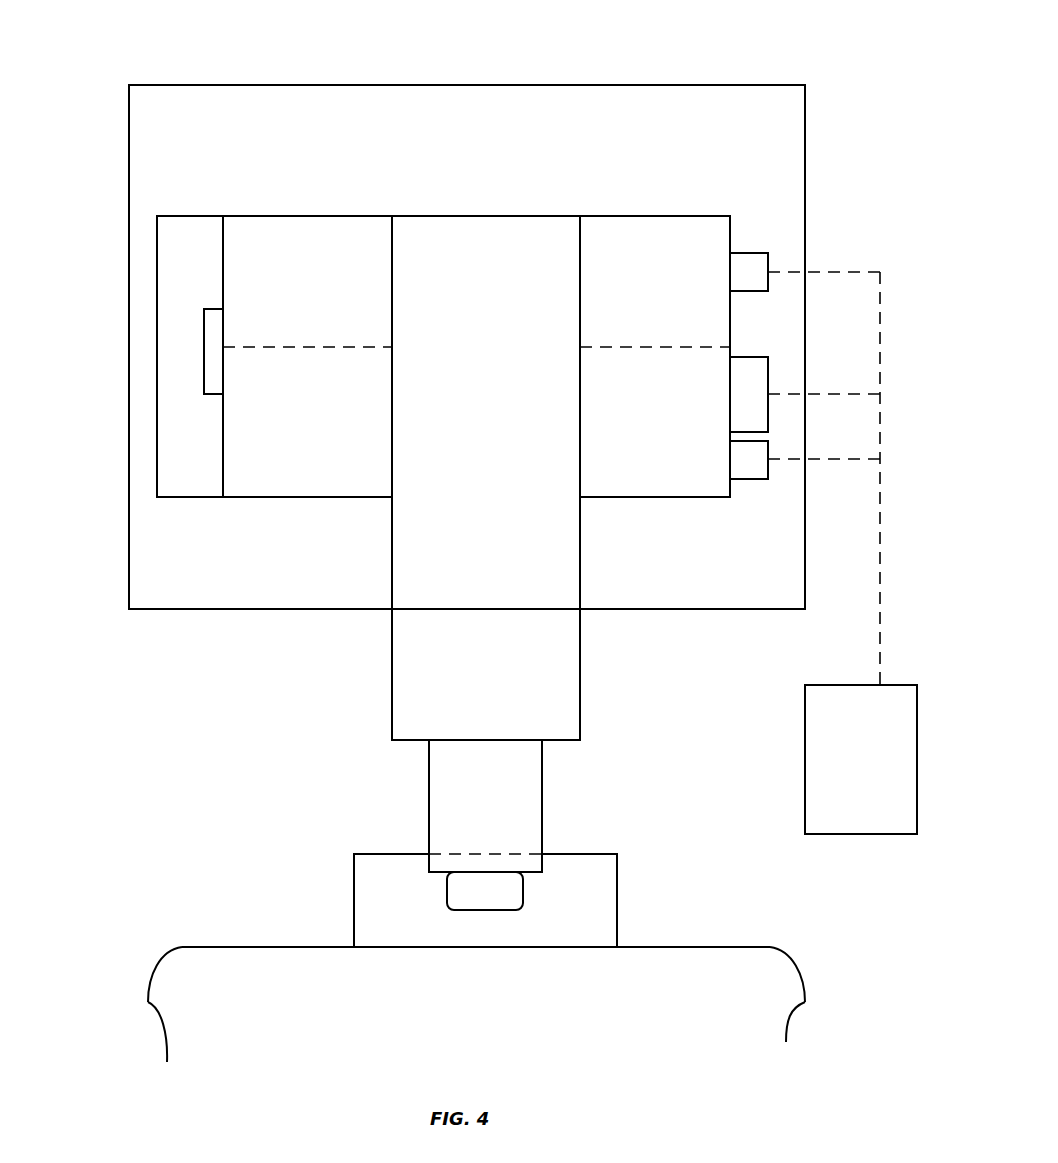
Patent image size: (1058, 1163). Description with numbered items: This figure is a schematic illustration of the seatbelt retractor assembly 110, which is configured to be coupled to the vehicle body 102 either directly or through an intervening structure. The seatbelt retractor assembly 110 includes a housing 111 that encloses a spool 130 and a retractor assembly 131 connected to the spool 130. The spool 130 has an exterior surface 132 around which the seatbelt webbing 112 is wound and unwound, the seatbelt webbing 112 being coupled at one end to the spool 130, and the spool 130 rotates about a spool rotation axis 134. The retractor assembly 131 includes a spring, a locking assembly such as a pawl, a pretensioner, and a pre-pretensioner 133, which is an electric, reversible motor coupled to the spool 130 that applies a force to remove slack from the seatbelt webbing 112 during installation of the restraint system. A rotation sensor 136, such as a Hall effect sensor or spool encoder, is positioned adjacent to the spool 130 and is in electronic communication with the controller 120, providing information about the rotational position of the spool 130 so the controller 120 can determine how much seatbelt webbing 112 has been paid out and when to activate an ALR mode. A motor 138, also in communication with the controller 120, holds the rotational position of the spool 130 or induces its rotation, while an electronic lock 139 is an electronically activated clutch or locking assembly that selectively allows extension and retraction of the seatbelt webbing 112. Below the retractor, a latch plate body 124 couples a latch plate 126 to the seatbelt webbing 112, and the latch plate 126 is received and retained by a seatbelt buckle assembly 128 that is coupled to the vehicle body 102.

The seatbelt retractor assembly 110 is at (97, 68).
The housing 111 is at (805, 150).
The seatbelt webbing 112 is at (580, 566).
The controller 120 is at (805, 765).
The latch plate body 124 is at (542, 808).
The latch plate 126 is at (505, 910).
The seatbelt buckle assembly 128 is at (617, 922).
The vehicle body 102 is at (209, 947).
The spool 130 is at (632, 216).
The retractor assembly 131 is at (156, 480).
The exterior surface 132 is at (258, 245).
The pre-pretensioner 133 is at (204, 368).
The spool rotation axis 134 is at (303, 347).
The rotation sensor 136 is at (768, 263).
The motor 138 is at (768, 378).
The electronic lock 139 is at (768, 456).